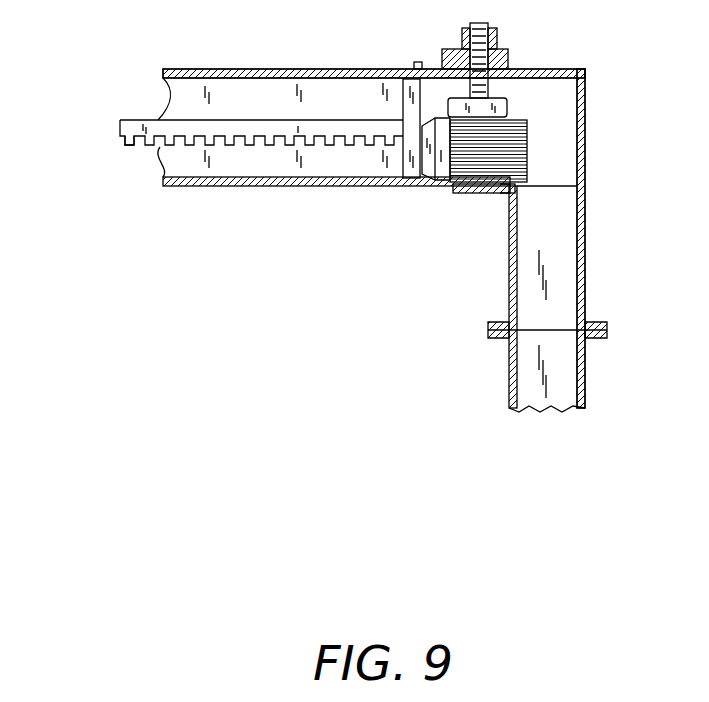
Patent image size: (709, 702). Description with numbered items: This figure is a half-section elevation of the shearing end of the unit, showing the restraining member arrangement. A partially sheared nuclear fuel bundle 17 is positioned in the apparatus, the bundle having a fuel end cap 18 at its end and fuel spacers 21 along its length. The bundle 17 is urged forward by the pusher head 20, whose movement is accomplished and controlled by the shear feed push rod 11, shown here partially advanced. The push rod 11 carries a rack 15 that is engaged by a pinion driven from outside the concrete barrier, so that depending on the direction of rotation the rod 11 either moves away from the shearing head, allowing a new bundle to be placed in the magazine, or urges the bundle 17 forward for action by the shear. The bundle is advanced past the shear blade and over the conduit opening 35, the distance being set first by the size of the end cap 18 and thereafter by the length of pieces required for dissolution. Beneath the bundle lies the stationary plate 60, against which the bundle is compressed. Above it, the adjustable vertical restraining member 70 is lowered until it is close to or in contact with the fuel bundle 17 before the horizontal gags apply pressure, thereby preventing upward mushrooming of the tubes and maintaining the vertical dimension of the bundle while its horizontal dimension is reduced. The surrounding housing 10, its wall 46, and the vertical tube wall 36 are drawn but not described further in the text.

The tubular housing 10 is at (232, 85).
The housing top wall 46 is at (268, 75).
The rack rod 11 is at (136, 120).
The rack teeth 15 is at (128, 145).
The vertical plate 20 is at (392, 83).
The block 18 is at (442, 176).
The coupling member 17 is at (526, 147).
The adjusting plate with screw 70 is at (500, 107).
The bottom plate 21 is at (484, 186).
The bracket 60 is at (505, 195).
The vertical tube 35 is at (560, 212).
The vertical tube wall 36 is at (585, 278).